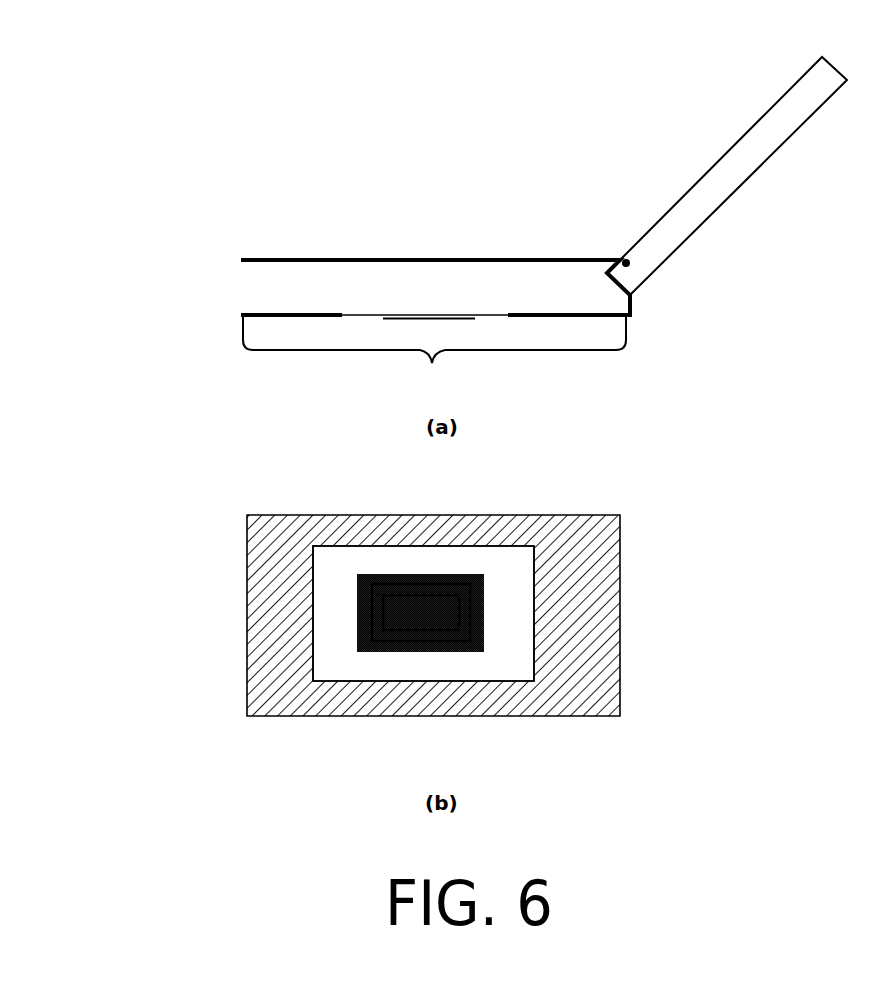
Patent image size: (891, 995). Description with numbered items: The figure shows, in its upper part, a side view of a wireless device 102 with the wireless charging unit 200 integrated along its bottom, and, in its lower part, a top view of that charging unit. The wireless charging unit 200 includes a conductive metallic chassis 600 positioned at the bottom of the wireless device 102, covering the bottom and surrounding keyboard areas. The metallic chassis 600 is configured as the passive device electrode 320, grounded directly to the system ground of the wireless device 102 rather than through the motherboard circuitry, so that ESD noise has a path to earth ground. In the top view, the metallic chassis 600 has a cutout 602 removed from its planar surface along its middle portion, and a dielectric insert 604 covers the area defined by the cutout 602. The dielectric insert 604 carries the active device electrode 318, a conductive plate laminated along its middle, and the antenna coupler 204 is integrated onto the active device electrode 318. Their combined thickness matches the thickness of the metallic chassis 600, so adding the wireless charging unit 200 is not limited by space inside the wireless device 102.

The wireless device 102 is at (372, 233).
The metallic chassis 600 is at (287, 312).
The wireless charging unit 200 is at (434, 350).
The active device electrode 318 is at (418, 575).
The antenna coupler 204 is at (447, 590).
The dielectric insert 604 is at (332, 619).
The passive device electrode 320 is at (292, 687).
The cutout 602 is at (425, 685).